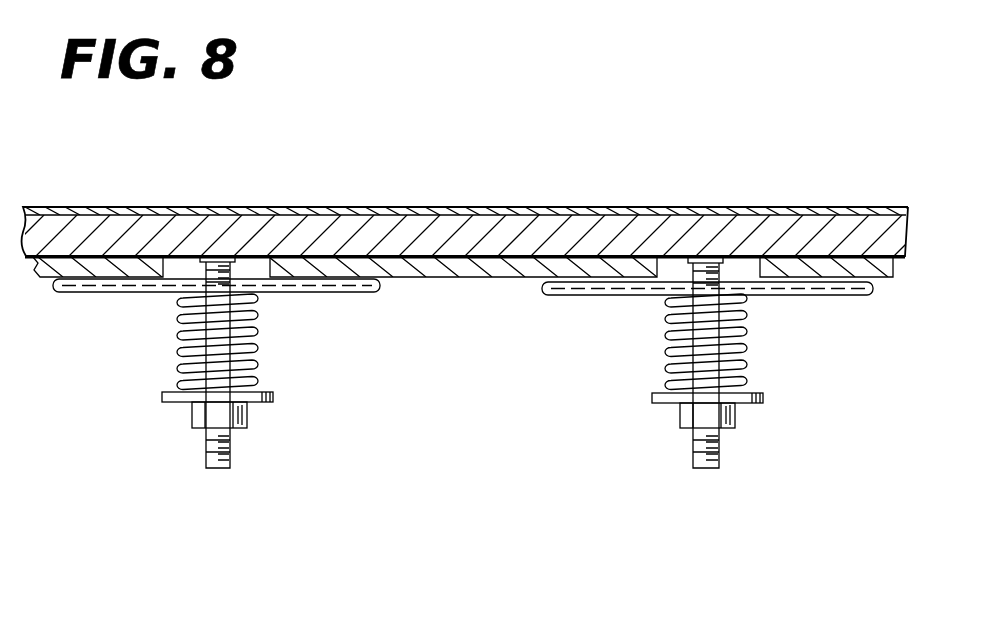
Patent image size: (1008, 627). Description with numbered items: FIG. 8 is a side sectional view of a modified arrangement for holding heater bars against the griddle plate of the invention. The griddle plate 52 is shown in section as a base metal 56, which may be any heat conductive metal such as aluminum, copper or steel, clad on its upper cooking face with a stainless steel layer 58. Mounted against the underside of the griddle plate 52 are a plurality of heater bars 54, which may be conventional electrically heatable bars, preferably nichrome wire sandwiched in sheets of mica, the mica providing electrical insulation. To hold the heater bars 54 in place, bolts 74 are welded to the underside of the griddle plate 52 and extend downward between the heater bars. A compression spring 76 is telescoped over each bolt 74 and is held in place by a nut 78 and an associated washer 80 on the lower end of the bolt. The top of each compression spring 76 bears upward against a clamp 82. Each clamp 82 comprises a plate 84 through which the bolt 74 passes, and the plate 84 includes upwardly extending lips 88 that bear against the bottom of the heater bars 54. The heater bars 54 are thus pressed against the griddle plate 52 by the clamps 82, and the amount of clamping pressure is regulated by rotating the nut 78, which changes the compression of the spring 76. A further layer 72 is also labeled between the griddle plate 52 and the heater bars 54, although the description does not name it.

The panel 52 is at (684, 212).
The backing layer 54 is at (445, 277).
The panel core 56 is at (348, 222).
The top surface layer 58 is at (437, 212).
The adhesive layer 72 is at (515, 260).
The bolt 74 is at (228, 446).
The spring 76 is at (243, 335).
The nut 78 is at (733, 424).
The washer 80 is at (655, 404).
The channel 82 is at (600, 296).
The strip 84 is at (788, 296).
The strip end 88 is at (540, 284).